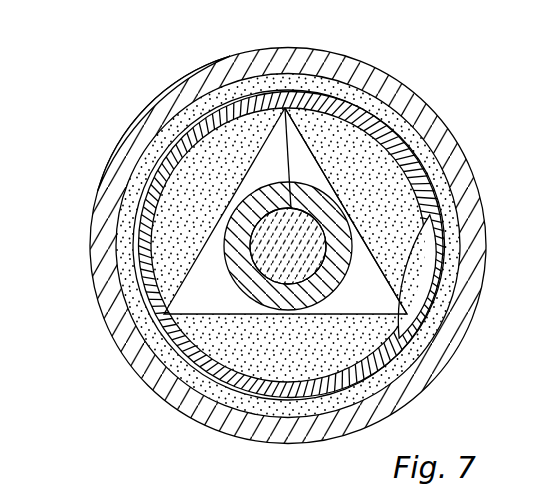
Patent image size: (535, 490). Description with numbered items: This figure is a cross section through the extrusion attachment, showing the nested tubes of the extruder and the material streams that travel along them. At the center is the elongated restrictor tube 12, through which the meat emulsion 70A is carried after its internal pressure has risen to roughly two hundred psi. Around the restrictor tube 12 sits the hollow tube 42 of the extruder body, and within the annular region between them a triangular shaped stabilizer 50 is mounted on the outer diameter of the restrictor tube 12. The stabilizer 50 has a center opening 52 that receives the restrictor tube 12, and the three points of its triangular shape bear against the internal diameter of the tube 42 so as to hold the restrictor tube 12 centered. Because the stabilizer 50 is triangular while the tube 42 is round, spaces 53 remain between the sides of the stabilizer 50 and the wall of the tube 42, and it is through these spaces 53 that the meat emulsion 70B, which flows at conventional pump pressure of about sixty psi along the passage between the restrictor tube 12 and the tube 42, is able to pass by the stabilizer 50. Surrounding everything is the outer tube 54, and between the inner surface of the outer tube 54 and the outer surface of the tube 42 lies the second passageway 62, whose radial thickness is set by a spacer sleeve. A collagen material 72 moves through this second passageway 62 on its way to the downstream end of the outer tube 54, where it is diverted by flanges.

The restrictor tube 12 is at (237, 237).
The hollow tube 42 is at (182, 413).
The stabilizer 50 is at (200, 68).
The center opening 52 is at (333, 190).
The spaces 53 is at (185, 175).
The outer tube 54 is at (125, 360).
The second passageway 62 is at (432, 335).
The collagen material 72 is at (395, 378).
The meat emulsion 70A is at (270, 162).
The meat emulsion 70B is at (342, 145).